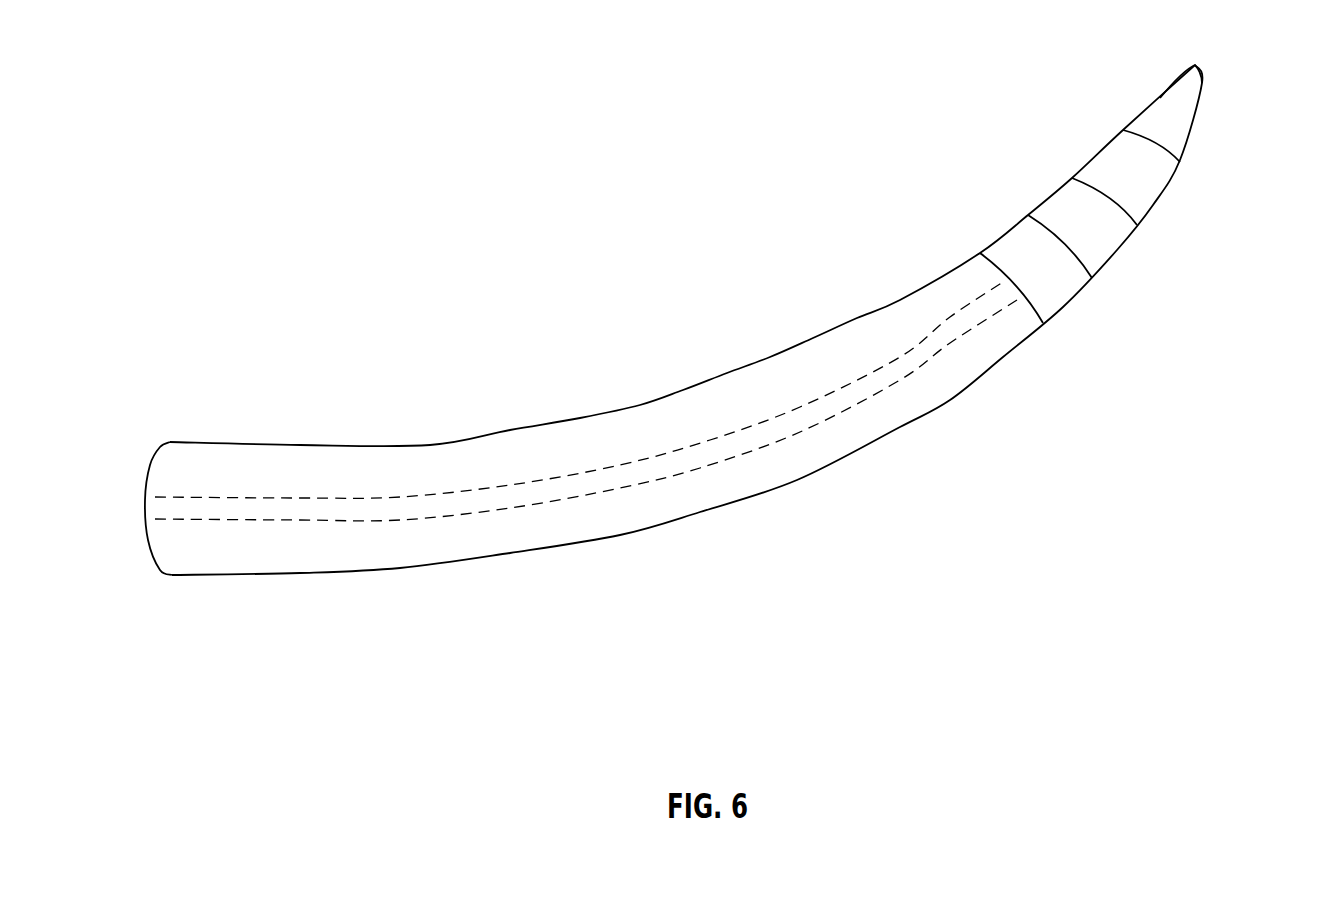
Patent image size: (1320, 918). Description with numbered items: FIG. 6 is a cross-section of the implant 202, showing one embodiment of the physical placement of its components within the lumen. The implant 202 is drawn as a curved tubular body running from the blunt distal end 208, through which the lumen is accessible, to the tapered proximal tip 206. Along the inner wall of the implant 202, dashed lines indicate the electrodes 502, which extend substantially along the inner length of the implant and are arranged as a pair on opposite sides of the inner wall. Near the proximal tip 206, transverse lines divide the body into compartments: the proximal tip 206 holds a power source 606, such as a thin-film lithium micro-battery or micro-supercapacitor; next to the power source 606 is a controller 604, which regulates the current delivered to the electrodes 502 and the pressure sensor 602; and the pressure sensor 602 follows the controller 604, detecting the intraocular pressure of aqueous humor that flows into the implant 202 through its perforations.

The implant 202 is at (600, 240).
The proximal tip 206 is at (1204, 80).
The distal end 208 is at (148, 467).
The electrodes 502 is at (710, 440).
The pressure sensor 602 is at (1065, 312).
The controller 604 is at (1115, 253).
The power source 606 is at (1163, 182).